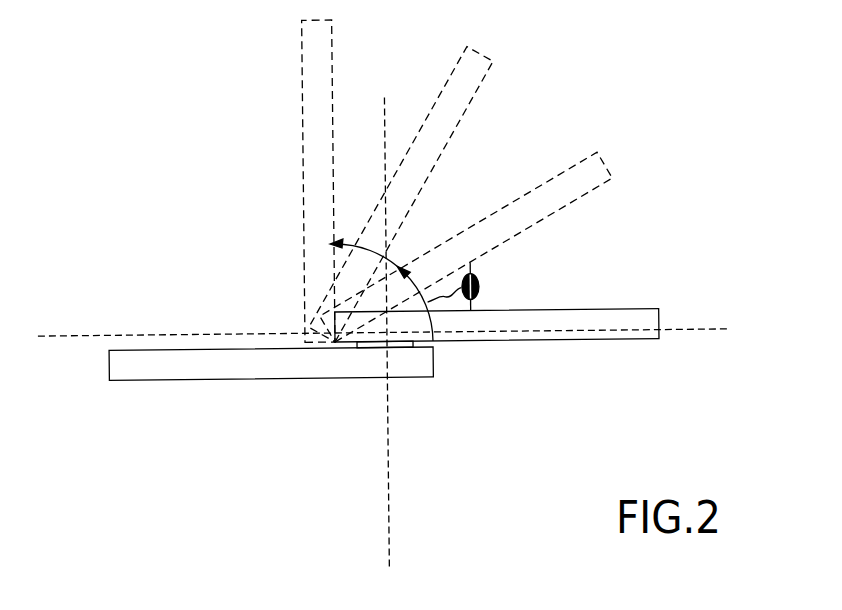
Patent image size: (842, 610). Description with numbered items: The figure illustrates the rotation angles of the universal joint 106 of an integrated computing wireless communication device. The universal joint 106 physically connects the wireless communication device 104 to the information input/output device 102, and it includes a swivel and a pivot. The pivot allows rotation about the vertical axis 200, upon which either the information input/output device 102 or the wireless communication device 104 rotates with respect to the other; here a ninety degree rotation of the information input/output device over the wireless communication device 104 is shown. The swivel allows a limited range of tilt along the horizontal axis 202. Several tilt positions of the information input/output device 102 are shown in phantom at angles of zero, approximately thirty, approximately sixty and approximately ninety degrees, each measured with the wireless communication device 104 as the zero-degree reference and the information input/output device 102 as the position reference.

The information input/output device 102 is at (573, 342).
The wireless communication device 104 is at (115, 379).
The universal joint 106 is at (413, 345).
The vertical axis 200 is at (388, 530).
The horizontal axis 202 is at (712, 333).